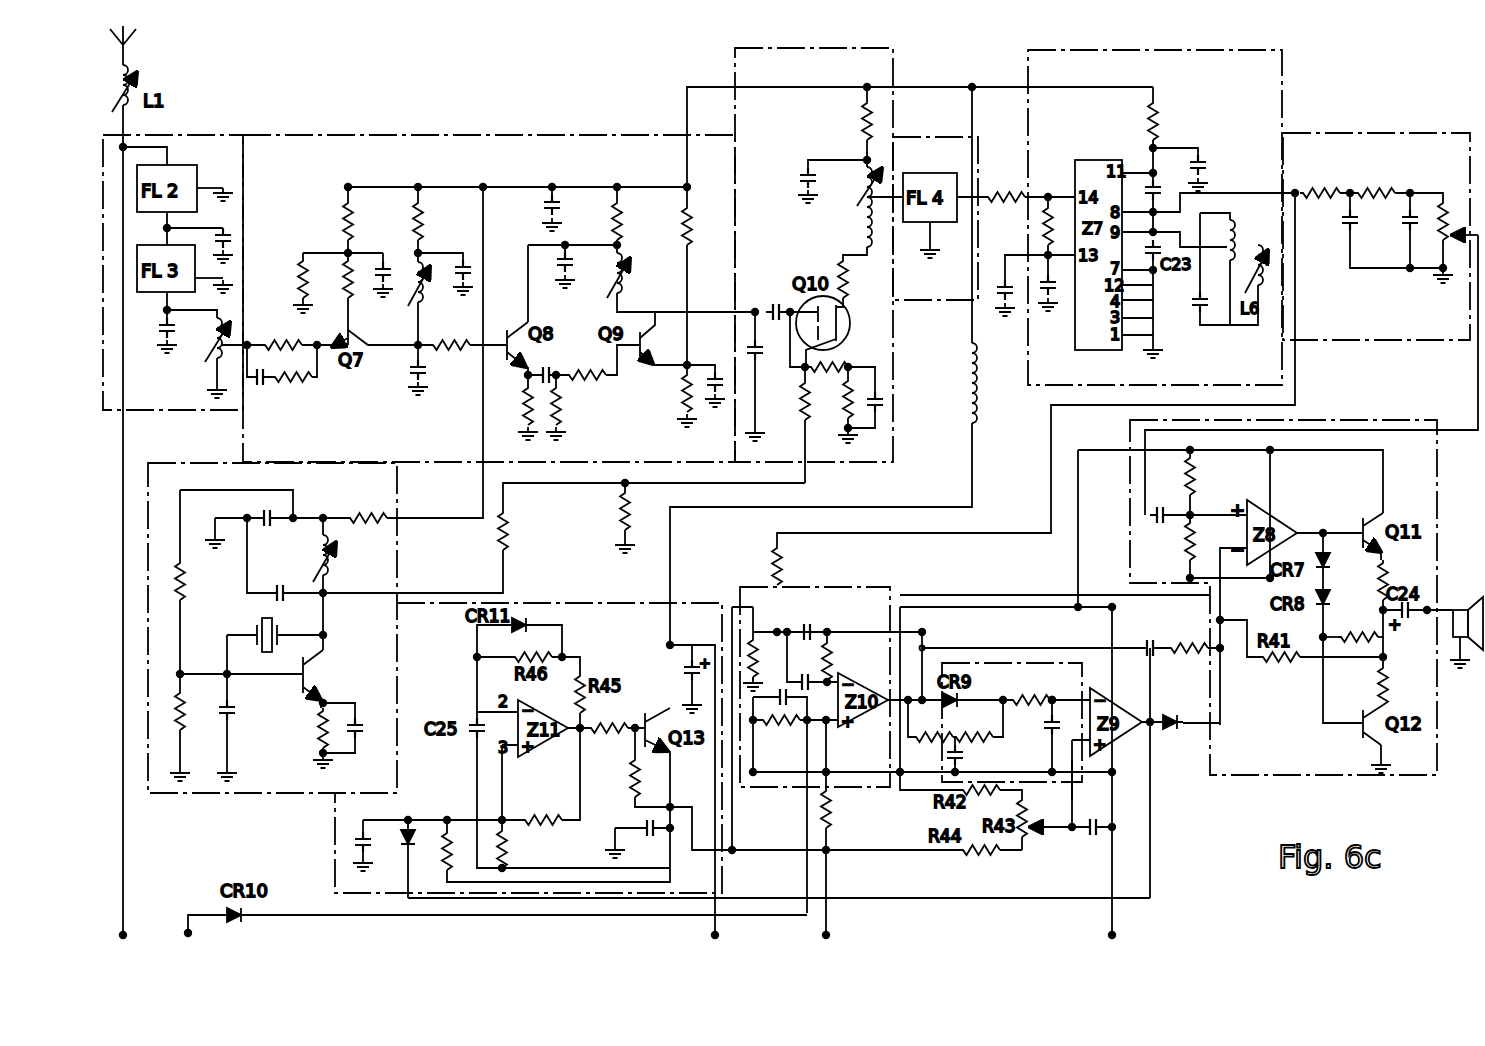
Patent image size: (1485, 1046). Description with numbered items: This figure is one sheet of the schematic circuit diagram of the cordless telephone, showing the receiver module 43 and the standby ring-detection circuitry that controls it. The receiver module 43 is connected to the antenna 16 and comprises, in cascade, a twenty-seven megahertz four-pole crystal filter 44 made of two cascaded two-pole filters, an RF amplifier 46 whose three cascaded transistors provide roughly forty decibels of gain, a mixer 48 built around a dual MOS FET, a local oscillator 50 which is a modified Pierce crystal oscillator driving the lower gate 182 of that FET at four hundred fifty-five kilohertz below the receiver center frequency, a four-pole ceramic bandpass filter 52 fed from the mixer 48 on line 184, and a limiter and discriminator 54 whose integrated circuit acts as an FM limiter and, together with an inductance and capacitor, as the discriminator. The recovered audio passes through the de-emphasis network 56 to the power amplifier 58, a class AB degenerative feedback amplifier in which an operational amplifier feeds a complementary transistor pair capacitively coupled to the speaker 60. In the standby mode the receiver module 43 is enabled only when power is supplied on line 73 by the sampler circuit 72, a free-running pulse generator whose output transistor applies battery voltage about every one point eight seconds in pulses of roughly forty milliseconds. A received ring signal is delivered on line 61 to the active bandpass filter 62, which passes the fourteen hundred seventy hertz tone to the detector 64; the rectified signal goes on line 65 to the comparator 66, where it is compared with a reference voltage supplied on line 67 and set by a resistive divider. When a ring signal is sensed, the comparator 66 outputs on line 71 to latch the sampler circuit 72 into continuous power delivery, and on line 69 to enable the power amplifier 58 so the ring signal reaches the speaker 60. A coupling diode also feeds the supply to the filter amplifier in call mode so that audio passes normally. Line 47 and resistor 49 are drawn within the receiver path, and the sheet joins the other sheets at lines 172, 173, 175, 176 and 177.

The antenna 16 is at (133, 42).
The receiver module 43 is at (428, 125).
The crystal filter 44 is at (205, 135).
The RF amplifier 46 is at (530, 135).
The supply line 47 is at (688, 302).
The mixer 48 is at (845, 48).
The resistor 49 is at (503, 548).
The local oscillator 50 is at (397, 690).
The bandpass filter 52 is at (905, 135).
The limiter and discriminator 54 is at (1205, 50).
The de-emphasis network 56 is at (1370, 133).
The power amplifier 58 is at (1372, 418).
The speaker 60 is at (1465, 607).
The line 61 is at (1049, 460).
The active bandpass filter 62 is at (833, 587).
The detector 64 is at (1045, 662).
The line 65 is at (1062, 705).
The comparator 66 is at (1150, 768).
The line 67 is at (1071, 810).
The line 69 is at (1222, 675).
The line 71 is at (940, 898).
The sampler circuit 72 is at (572, 603).
The line 73 is at (673, 572).
The joining line 172 is at (123, 903).
The joining line 173 is at (185, 930).
The joining line 175 is at (712, 930).
The joining line 176 is at (828, 934).
The terminal 177 is at (1114, 934).
The lower gate 182 is at (803, 380).
The line 184 is at (843, 303).